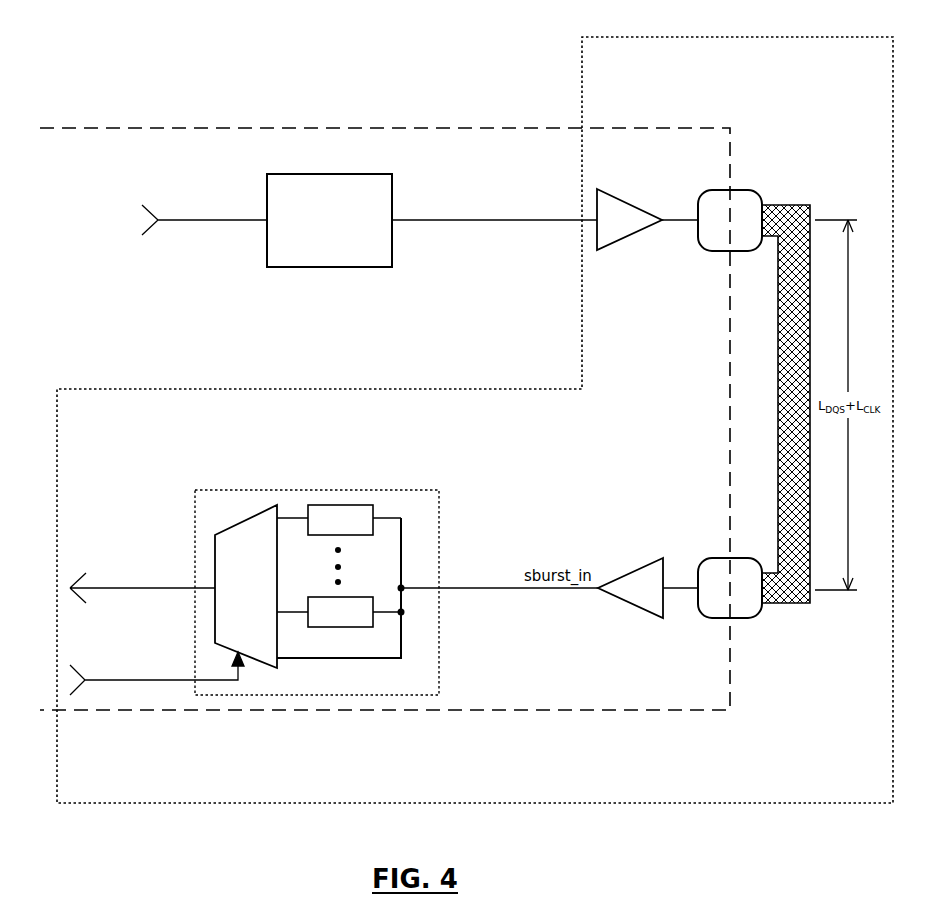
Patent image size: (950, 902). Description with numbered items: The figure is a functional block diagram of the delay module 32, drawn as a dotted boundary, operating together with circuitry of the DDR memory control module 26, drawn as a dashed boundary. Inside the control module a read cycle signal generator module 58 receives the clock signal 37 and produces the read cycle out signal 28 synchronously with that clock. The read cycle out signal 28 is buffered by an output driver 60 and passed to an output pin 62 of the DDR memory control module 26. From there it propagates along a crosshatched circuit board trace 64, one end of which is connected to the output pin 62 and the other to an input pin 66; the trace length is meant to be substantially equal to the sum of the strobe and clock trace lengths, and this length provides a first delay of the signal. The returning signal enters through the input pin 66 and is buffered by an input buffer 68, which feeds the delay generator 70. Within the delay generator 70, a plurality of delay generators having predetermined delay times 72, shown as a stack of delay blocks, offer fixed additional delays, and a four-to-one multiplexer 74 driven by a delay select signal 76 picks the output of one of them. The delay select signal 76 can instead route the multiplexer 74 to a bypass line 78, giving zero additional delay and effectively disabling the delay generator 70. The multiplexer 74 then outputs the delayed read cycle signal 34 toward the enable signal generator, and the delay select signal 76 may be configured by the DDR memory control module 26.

The DDR memory control module 26 is at (176, 128).
The read cycle out signal 28 is at (472, 220).
The delay module 32 is at (590, 37).
The delayed read cycle signal 34 is at (86, 573).
The clock signal 37 is at (252, 220).
The read cycle signal generator module 58 is at (312, 174).
The output driver 60 is at (618, 199).
The output pin 62 is at (708, 190).
The circuit board trace 64 is at (802, 205).
The input pin 66 is at (711, 558).
The input buffer 68 is at (651, 562).
The delay generator 70 is at (208, 490).
The delay generators having predetermined delay times 72 is at (373, 512).
The multiplexer 74 is at (244, 520).
The delay select signal 76 is at (109, 680).
The bypass line 78 is at (383, 658).